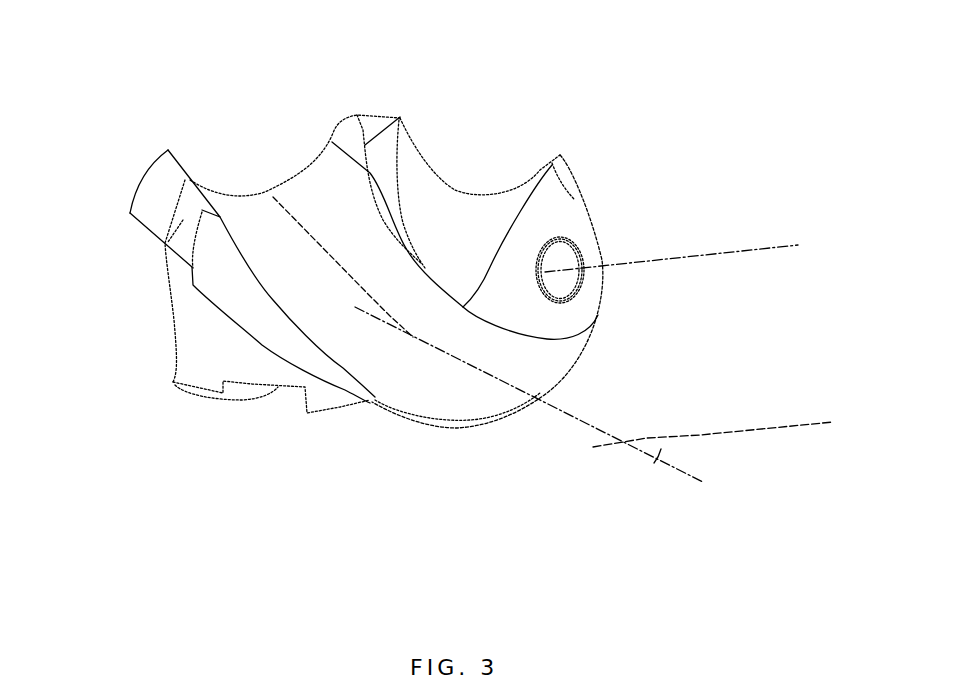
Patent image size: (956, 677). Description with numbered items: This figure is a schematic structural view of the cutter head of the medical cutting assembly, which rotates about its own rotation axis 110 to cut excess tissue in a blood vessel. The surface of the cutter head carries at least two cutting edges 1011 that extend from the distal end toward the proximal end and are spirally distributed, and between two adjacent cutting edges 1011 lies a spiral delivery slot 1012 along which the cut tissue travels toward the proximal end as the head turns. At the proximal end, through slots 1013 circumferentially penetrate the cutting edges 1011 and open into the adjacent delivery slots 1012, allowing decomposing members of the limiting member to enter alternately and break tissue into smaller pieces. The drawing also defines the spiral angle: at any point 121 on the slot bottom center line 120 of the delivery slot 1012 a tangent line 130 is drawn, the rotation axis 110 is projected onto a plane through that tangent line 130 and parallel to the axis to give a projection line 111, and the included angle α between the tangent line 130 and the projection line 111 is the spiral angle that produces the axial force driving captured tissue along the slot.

The rotation axis 110 is at (717, 255).
The projection line 111 is at (773, 430).
The slot bottom center line 120 is at (525, 395).
The point 121 is at (455, 358).
The tangent line 130 is at (663, 438).
The cutting edge 1011 is at (332, 142).
The delivery slot 1012 is at (412, 378).
The through slot 1013 is at (178, 173).